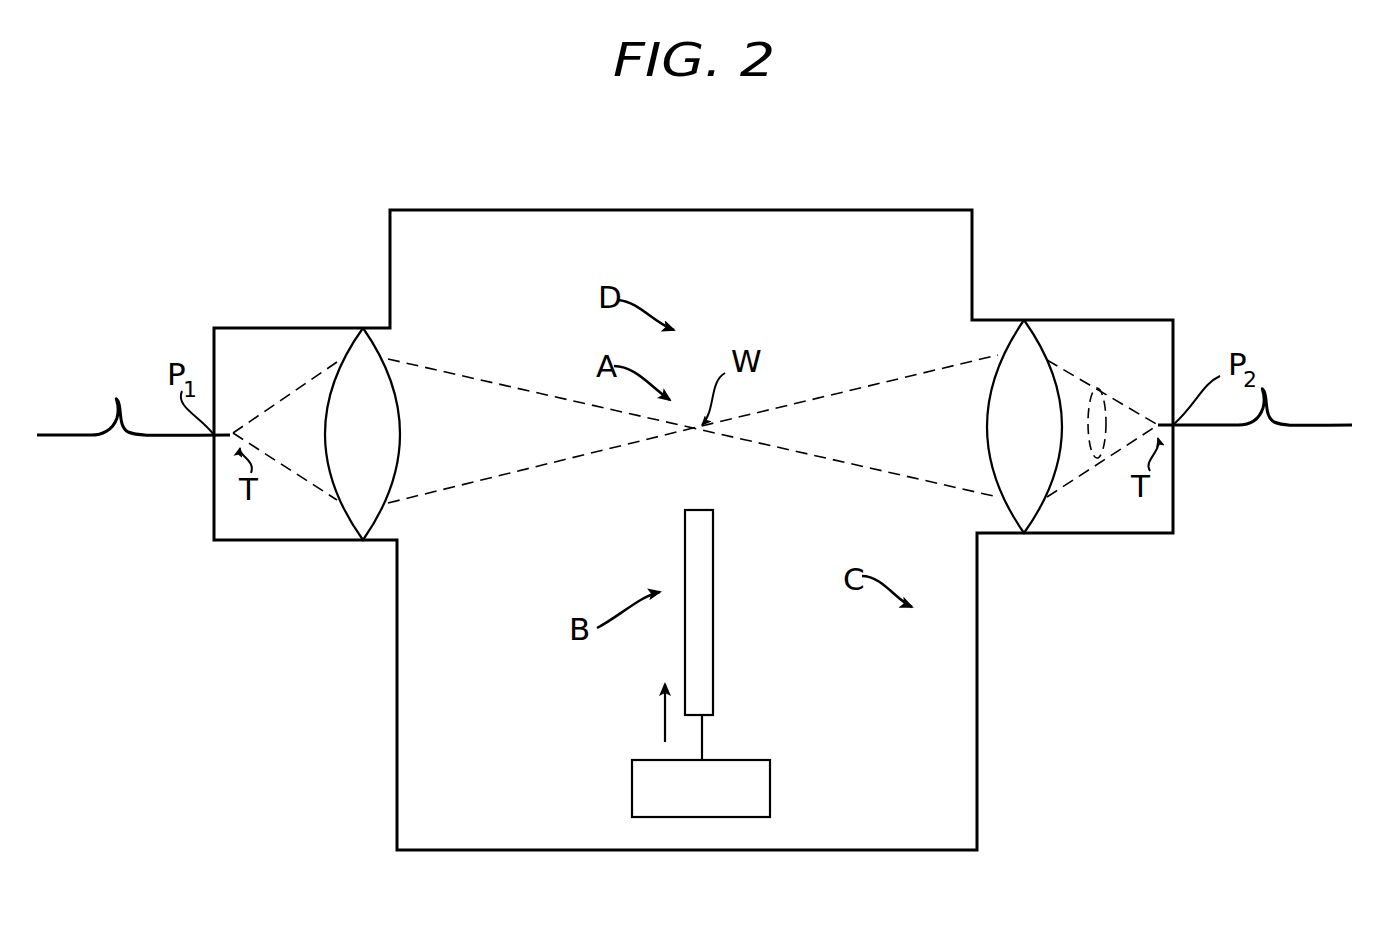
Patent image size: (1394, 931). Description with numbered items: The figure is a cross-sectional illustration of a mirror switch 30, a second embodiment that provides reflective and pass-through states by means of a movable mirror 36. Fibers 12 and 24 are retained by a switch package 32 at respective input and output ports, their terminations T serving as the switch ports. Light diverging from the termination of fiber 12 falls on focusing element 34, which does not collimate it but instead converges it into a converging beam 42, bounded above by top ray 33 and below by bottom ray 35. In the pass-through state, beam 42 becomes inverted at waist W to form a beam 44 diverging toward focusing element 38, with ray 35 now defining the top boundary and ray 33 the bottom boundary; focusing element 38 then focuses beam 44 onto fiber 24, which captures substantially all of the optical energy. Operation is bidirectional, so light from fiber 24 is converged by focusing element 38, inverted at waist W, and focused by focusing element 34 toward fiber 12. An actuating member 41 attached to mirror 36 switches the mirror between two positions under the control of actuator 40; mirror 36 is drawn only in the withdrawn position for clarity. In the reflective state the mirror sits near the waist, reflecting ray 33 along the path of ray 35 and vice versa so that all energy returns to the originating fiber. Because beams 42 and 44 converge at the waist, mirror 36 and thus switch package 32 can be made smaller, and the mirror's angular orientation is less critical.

The fiber 12 is at (67, 441).
The fiber 24 is at (1330, 427).
The mirror switch 30 is at (1132, 230).
The switch package 32 is at (873, 208).
The top ray 33 is at (447, 373).
The focusing element 34 is at (393, 432).
The bottom ray 35 is at (481, 484).
The movable mirror 36 is at (714, 623).
The focusing element 38 is at (1001, 428).
The actuator 40 is at (632, 790).
The actuating member 41 is at (703, 740).
The converging beam 42 is at (535, 454).
The beam 44 is at (880, 449).